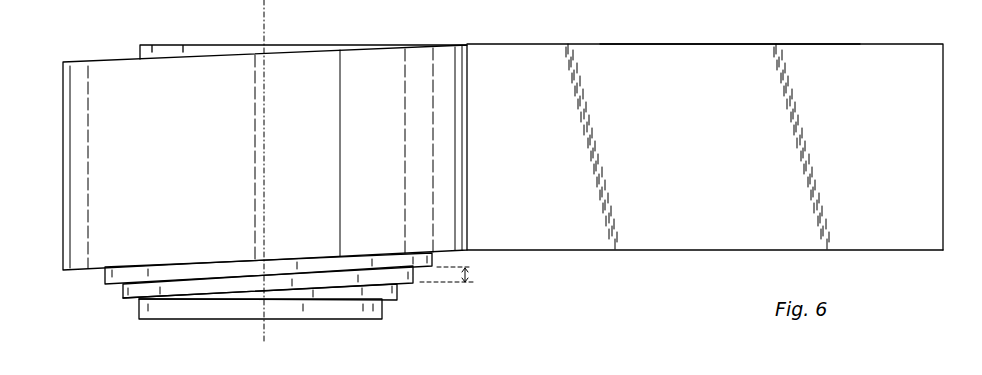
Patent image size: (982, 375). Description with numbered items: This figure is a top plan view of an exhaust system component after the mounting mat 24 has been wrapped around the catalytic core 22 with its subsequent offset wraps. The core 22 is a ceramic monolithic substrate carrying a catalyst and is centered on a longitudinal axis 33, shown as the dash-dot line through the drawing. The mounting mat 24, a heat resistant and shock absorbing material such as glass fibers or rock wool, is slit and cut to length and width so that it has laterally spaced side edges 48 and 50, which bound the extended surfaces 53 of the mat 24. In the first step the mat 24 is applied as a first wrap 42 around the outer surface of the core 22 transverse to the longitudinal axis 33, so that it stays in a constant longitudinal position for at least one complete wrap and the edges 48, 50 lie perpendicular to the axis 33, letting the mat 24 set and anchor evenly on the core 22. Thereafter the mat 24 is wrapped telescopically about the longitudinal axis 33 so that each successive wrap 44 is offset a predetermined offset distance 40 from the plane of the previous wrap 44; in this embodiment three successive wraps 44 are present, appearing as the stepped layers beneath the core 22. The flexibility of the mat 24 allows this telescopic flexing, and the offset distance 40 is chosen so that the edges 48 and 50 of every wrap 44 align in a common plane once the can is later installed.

The catalytic core 22 is at (358, 323).
The mounting mat 24 is at (817, 77).
The longitudinal axis 33 is at (265, 40).
The offset distance 40 is at (470, 272).
The first wrap 42 is at (388, 292).
The successive wraps 44 is at (434, 256).
The side edge 48 is at (727, 44).
The side edge 50 is at (675, 252).
The extended surfaces 53 is at (702, 158).